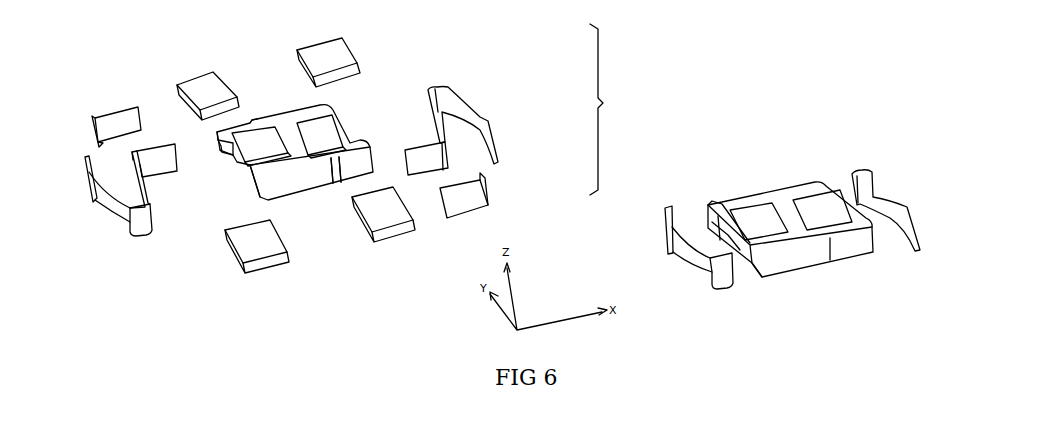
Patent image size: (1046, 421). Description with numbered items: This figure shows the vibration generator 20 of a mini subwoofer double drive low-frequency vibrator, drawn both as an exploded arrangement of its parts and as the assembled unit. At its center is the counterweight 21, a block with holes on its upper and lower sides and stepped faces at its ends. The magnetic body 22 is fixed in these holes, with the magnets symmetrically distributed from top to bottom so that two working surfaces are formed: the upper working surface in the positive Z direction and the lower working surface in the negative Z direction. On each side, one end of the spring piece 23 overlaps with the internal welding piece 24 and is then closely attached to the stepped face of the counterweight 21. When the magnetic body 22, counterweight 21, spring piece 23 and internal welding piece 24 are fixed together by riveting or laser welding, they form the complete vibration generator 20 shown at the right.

The vibration generator 20 is at (777, 180).
The counterweight 21 is at (297, 140).
The magnetic body 22 is at (358, 63).
The spring piece 23 is at (480, 120).
The internal welding piece 24 is at (477, 197).